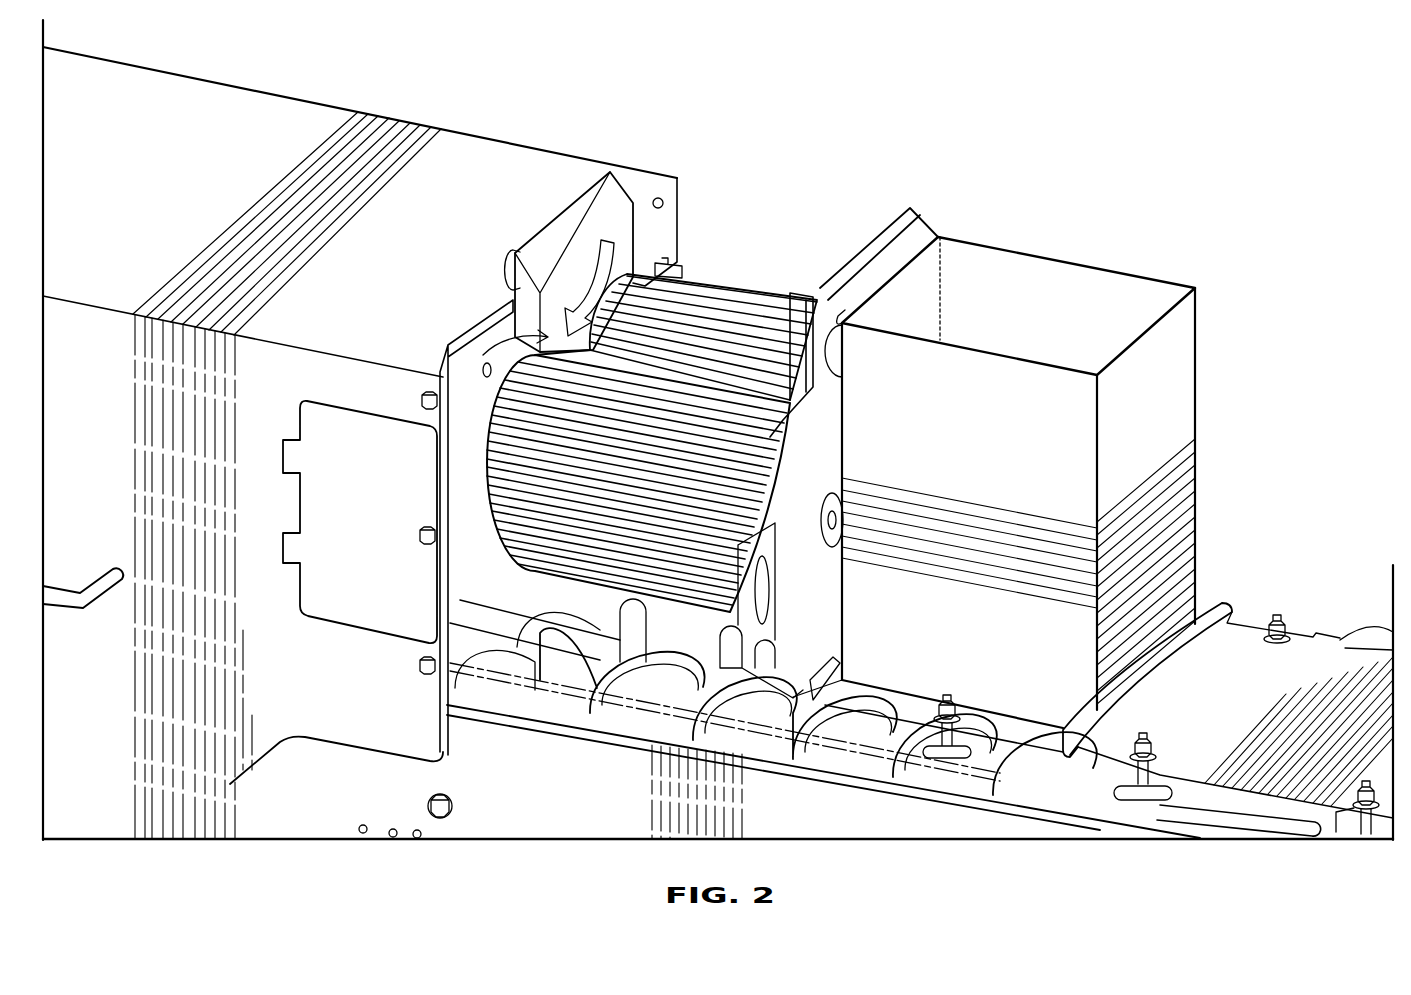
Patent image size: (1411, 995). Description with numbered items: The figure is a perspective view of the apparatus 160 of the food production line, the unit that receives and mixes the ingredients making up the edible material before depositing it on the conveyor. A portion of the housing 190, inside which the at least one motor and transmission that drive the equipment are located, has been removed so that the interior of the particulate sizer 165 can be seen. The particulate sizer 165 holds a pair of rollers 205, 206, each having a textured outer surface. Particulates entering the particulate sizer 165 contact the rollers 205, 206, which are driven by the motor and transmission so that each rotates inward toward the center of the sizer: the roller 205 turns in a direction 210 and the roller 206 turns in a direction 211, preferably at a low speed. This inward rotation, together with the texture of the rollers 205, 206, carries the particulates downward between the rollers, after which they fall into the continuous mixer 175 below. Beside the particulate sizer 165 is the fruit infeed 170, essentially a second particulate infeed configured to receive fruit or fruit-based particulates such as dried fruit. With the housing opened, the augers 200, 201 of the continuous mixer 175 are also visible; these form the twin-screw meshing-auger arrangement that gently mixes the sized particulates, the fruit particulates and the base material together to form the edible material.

The apparatus 160 is at (1056, 156).
The particulate sizer 165 is at (698, 265).
The fruit infeed 170 is at (1122, 270).
The continuous mixer 175 is at (531, 822).
The housing 190 is at (282, 113).
The auger 200 is at (553, 705).
The auger 201 is at (703, 683).
The roller 205 is at (530, 503).
The roller 206 is at (760, 287).
The direction 210 is at (485, 347).
The direction 211 is at (532, 243).